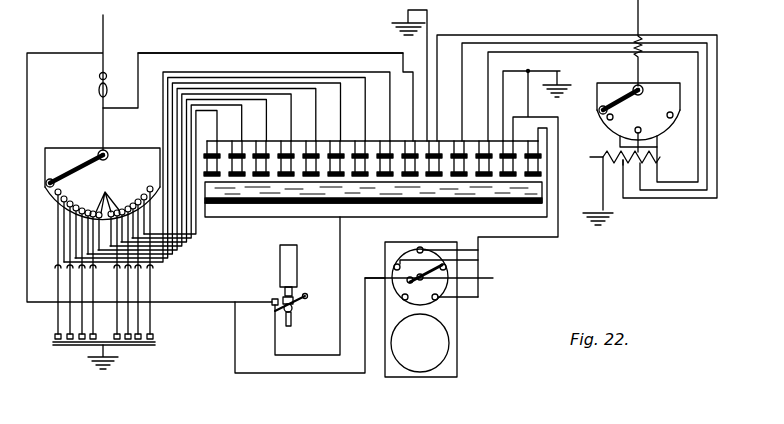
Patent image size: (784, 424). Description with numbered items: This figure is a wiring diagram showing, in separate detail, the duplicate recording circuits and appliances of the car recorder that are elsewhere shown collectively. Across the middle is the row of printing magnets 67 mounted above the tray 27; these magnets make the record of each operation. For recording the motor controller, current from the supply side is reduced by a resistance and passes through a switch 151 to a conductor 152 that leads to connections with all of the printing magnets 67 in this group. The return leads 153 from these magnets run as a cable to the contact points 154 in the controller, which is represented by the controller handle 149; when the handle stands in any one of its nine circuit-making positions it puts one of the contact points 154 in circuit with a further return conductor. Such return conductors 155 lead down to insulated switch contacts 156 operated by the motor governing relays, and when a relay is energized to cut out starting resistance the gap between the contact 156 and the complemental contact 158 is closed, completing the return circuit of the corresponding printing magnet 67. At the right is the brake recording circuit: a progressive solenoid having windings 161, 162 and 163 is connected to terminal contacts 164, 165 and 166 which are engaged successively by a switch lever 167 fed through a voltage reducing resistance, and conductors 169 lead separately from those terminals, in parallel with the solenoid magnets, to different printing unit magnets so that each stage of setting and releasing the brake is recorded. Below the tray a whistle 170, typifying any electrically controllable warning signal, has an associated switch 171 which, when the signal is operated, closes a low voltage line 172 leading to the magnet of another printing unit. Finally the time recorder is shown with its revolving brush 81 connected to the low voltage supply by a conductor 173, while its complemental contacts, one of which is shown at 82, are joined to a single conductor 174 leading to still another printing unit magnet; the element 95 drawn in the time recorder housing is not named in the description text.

The tray 27 is at (330, 192).
The printing magnets 67 is at (312, 168).
The revolving brush 81 is at (439, 273).
The contact of time recorder 82 is at (426, 240).
The motor 95 is at (437, 345).
The controller handle 149 is at (74, 168).
The switch 151 is at (99, 88).
The conductor 152 is at (337, 53).
The return leads 153 is at (203, 239).
The contact points 154 is at (104, 194).
The return conductor 155 is at (64, 271).
The insulated switch contact 156 is at (70, 333).
The complemental contact 158 is at (80, 346).
The solenoid winding 161 is at (608, 182).
The solenoid winding 162 is at (637, 163).
The solenoid winding 163 is at (657, 157).
The terminal contact 164 is at (607, 119).
The terminal contact 165 is at (651, 128).
The terminal contact 166 is at (672, 113).
The switch lever 167 is at (620, 97).
The conductors 169 is at (717, 115).
The whistle 170 is at (280, 260).
The switch 171 is at (272, 303).
The low voltage conducting line 172 is at (60, 53).
The conductor 173 is at (332, 374).
The conductor 174 is at (558, 193).